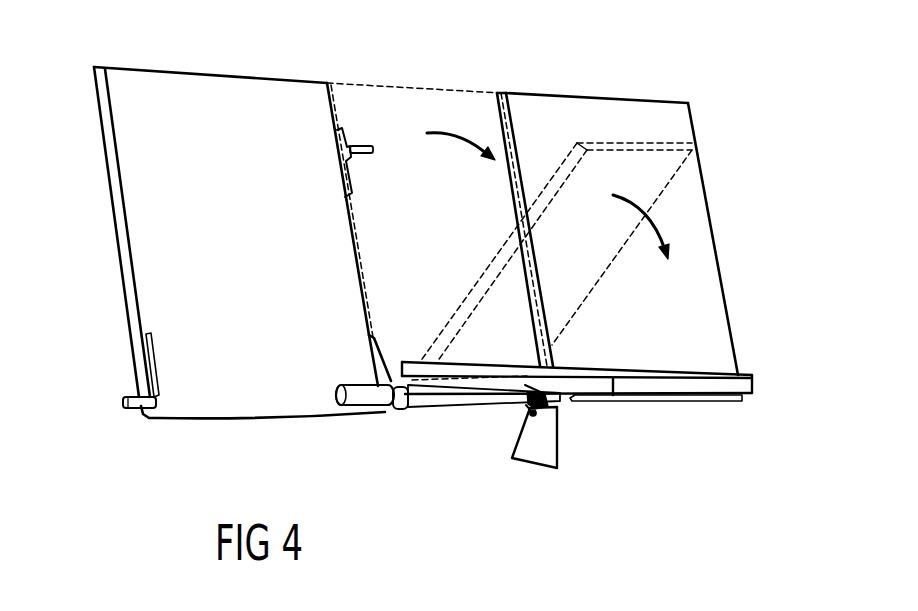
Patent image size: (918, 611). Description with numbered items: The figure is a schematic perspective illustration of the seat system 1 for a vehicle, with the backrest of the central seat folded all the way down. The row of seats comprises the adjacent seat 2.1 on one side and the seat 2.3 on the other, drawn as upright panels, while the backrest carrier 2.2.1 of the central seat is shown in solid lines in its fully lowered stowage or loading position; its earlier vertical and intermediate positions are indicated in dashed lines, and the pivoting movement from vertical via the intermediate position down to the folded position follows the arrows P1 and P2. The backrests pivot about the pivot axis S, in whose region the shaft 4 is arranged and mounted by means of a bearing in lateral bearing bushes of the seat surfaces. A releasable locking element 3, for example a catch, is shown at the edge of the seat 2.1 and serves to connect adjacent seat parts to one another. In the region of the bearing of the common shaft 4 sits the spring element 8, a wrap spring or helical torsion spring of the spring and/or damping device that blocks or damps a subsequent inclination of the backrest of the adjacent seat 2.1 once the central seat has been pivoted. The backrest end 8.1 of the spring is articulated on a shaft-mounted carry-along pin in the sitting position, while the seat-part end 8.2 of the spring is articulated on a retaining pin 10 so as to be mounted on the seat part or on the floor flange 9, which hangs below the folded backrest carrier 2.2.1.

The seat system 1 is at (760, 106).
The seat 2.1 is at (149, 97).
The seat 2.3 is at (632, 113).
The backrest carrier 2.2.1 is at (718, 386).
The releasable locking element 3 is at (365, 145).
The shaft 4 is at (482, 393).
The spring element 8 is at (557, 372).
The backrest end of the spring 8.1 is at (525, 385).
The seat-part end of the spring 8.2 is at (528, 412).
The floor flange 9 is at (550, 470).
The retaining pin 10 is at (537, 415).
The arrow P1 is at (455, 133).
The arrow P2 is at (660, 220).
The pivot axis S is at (122, 402).